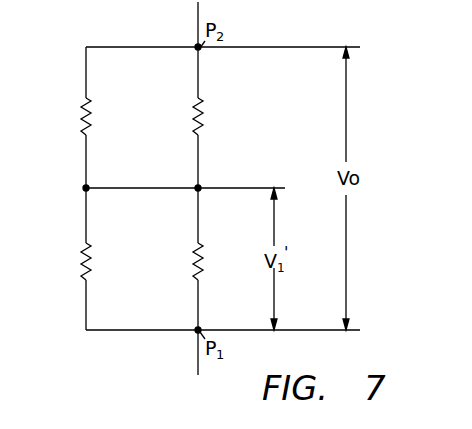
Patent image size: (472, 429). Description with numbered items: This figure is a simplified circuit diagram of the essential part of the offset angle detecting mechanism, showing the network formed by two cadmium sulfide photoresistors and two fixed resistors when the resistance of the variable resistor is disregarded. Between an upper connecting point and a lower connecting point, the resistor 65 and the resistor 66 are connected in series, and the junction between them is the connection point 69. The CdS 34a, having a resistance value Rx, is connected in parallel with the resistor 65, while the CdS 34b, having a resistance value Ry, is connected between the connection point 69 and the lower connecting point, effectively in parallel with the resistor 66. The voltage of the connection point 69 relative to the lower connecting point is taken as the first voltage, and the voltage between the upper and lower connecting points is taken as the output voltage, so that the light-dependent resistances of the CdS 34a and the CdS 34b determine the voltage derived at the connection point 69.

The CdS 34a is at (91, 110).
The resistor 65 is at (203, 110).
The connection point 69 is at (200, 186).
The CdS 34b is at (91, 255).
The resistor 66 is at (203, 255).